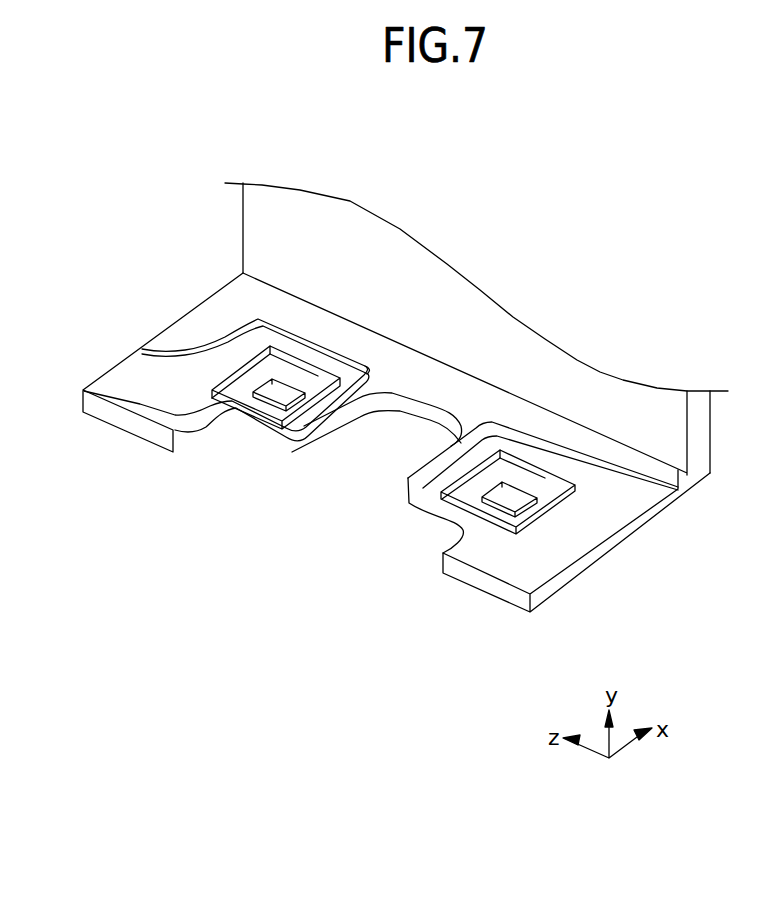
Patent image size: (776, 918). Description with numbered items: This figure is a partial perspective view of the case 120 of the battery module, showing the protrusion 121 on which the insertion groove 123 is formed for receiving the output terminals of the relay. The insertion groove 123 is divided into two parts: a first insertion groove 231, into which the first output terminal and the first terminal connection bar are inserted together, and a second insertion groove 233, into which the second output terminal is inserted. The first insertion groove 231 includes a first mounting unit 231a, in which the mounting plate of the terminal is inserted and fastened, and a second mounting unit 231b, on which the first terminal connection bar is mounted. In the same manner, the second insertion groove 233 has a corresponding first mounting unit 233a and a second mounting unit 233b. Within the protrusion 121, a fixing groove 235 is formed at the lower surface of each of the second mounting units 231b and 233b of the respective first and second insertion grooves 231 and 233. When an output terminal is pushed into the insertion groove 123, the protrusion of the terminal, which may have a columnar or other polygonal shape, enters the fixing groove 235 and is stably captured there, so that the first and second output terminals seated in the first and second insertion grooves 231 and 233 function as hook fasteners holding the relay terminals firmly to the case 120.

The case 120 is at (433, 293).
The protrusion 121 is at (415, 410).
The insertion groove 123 is at (745, 612).
The first insertion groove 231 is at (226, 452).
The first mounting unit 231a is at (250, 383).
The second mounting unit 231b is at (310, 400).
The second insertion groove 233 is at (585, 517).
The first mounting unit of second insertion groove 233a is at (543, 492).
The second mounting unit of second insertion groove 233b is at (575, 512).
The fixing groove 235 is at (276, 397).